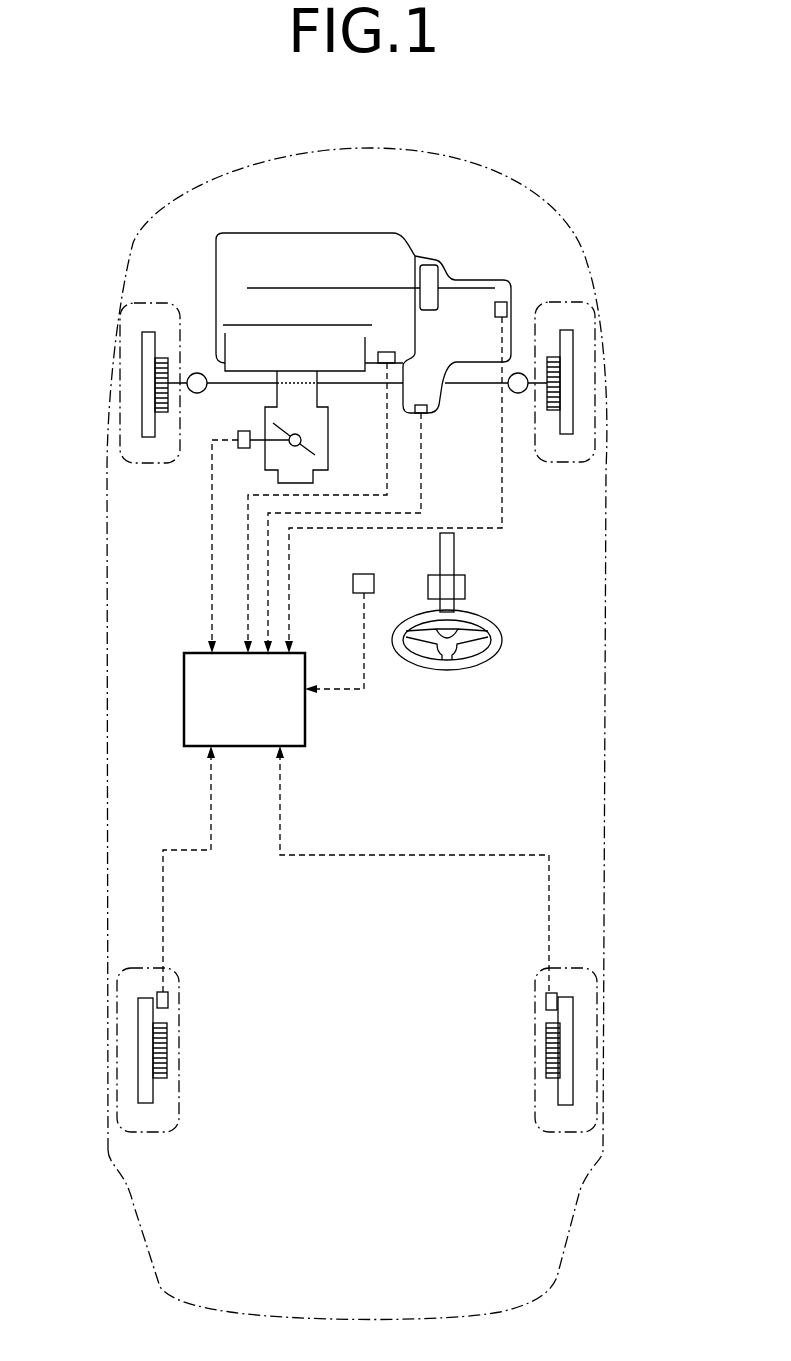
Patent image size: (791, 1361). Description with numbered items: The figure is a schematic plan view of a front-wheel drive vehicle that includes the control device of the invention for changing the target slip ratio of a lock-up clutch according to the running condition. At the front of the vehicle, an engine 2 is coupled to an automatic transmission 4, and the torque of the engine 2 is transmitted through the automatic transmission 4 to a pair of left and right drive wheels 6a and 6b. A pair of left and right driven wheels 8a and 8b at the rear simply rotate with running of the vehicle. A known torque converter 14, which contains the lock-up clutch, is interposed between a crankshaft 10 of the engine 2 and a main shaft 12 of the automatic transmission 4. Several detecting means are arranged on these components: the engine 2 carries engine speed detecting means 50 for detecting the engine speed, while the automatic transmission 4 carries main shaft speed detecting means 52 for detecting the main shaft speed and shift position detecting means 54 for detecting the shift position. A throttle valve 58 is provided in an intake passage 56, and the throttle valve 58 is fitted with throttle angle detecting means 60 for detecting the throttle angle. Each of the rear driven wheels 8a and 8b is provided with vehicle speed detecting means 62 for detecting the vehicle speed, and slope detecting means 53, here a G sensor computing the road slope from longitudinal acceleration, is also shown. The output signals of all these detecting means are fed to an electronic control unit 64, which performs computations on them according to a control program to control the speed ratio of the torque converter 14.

The engine 2 is at (328, 226).
The automatic transmission 4 is at (488, 279).
The left drive wheel 6a is at (148, 387).
The right drive wheel 6b is at (572, 383).
The left driven wheel 8a is at (147, 1052).
The right driven wheel 8b is at (572, 1050).
The crankshaft 10 is at (247, 288).
The main shaft 12 is at (463, 282).
The torque converter 14 is at (427, 272).
The engine speed detecting means 50 is at (389, 352).
The main shaft speed detecting means 52 is at (497, 312).
The slope detecting means 53 is at (360, 583).
The shift position detecting means 54 is at (424, 413).
The intake passage 56 is at (278, 478).
The throttle valve 58 is at (313, 448).
The throttle angle detecting means 60 is at (239, 437).
The vehicle speed detecting means 62 is at (168, 1000).
The electronic control unit 64 is at (305, 735).